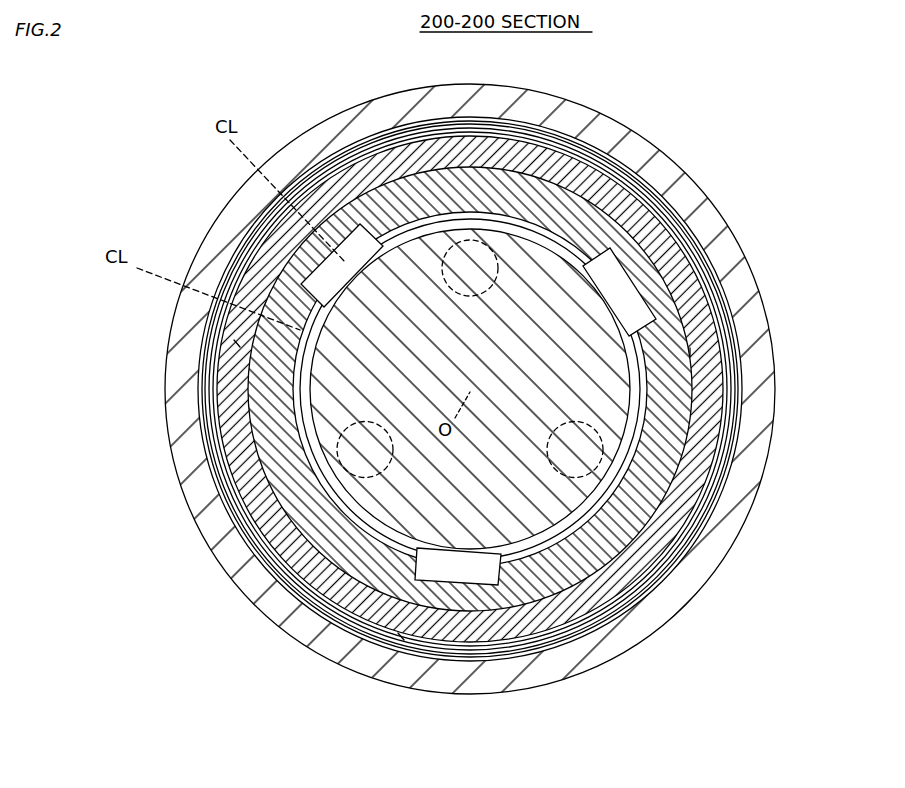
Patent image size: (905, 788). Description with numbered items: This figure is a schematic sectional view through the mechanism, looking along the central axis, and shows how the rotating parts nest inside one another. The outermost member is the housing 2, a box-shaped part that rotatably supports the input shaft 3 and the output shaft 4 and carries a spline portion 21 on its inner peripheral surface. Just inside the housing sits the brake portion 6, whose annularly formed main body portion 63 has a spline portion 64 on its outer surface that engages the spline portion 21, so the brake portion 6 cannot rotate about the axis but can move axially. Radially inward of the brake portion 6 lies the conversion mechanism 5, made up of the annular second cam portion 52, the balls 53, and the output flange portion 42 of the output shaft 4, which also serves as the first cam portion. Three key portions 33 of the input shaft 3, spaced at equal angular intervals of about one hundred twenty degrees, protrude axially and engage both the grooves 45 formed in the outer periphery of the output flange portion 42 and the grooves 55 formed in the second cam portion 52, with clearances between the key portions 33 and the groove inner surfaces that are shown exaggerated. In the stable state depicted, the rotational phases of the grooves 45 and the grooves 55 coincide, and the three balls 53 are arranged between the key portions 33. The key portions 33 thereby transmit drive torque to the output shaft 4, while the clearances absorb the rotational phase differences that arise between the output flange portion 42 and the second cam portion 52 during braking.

The housing 2 is at (580, 98).
The brake portion 6 is at (470, 388).
The main body portion 63 is at (645, 158).
The spline portion 21 is at (479, 421).
The spline portion 64 is at (640, 612).
The balls 53 is at (488, 125).
The output flange portion 42 is at (421, 389).
The output shaft 4 is at (262, 420).
The key portions 33 is at (486, 462).
The input shaft 3 is at (250, 252).
The grooves 45 is at (348, 280).
The second cam portion 52 is at (470, 299).
The conversion mechanism 5 is at (470, 389).
The grooves 55 is at (236, 344).